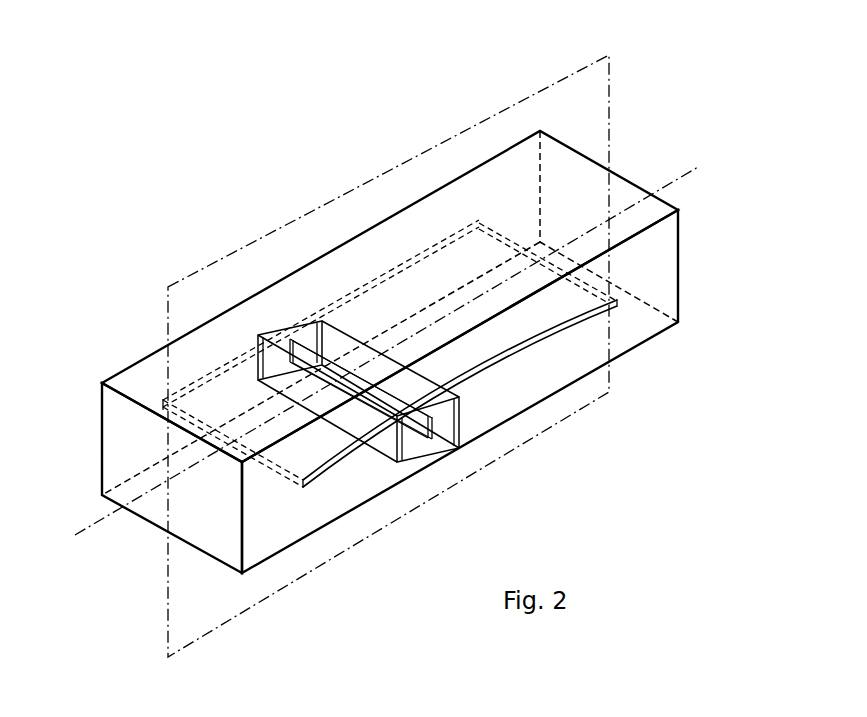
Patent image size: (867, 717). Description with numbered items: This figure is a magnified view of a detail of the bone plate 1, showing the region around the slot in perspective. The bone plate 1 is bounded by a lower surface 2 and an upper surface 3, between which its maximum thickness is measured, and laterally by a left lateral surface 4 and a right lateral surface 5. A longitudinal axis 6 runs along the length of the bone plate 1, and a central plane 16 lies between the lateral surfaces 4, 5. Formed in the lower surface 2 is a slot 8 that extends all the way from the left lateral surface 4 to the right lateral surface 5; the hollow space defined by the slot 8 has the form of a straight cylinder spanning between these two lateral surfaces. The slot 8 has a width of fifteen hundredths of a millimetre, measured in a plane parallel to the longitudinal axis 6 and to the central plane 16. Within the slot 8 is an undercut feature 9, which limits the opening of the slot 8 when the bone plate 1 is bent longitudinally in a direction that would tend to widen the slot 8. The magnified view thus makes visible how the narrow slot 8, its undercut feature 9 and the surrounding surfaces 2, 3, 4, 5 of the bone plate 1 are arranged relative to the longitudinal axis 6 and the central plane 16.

The bone plate 1 is at (239, 187).
The lower surface 2 is at (399, 339).
The upper surface 3 is at (516, 165).
The left lateral surface 4 is at (282, 513).
The right lateral surface 5 is at (188, 328).
The longitudinal axis 6 is at (92, 522).
The slot 8 is at (552, 332).
The undercut feature 9 is at (415, 445).
The central plane 16 is at (598, 93).